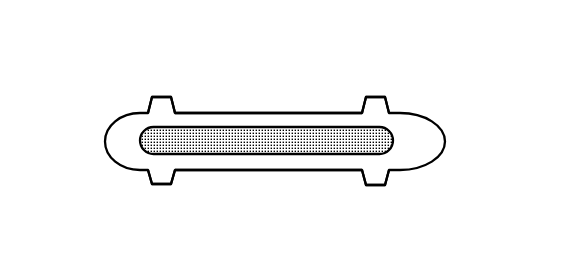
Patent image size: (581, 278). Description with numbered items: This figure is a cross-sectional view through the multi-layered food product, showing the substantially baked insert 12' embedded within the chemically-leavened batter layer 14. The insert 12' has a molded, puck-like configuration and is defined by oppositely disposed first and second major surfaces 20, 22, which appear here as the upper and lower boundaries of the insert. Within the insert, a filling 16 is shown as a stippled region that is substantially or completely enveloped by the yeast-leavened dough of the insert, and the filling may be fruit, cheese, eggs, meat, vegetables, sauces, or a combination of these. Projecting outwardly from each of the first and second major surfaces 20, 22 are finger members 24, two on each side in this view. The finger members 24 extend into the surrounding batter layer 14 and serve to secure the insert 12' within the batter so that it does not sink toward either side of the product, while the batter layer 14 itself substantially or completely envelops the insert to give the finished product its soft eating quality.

The substantially baked insert 12' is at (282, 143).
The chemically-leavened batter layer 14 is at (122, 127).
The filling 16 is at (394, 143).
The first major surface 20 is at (275, 113).
The second major surface 22 is at (248, 171).
The finger member 24 is at (180, 98).